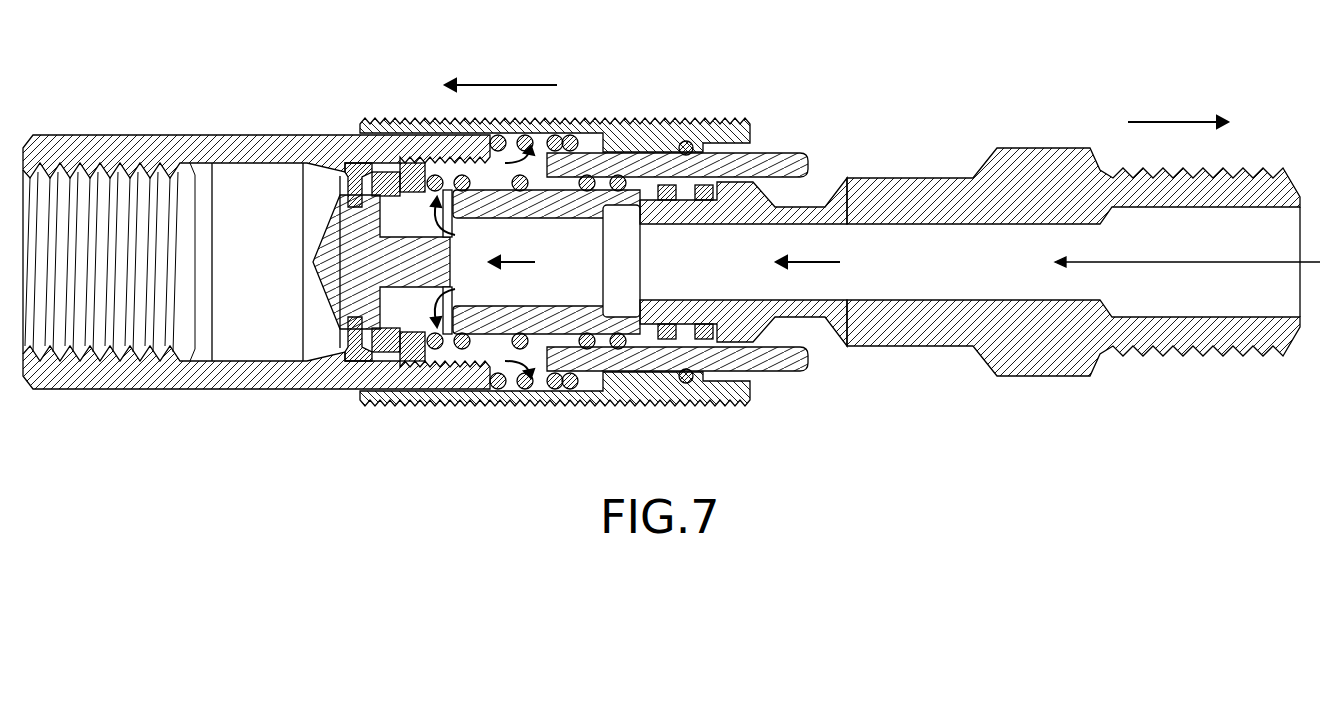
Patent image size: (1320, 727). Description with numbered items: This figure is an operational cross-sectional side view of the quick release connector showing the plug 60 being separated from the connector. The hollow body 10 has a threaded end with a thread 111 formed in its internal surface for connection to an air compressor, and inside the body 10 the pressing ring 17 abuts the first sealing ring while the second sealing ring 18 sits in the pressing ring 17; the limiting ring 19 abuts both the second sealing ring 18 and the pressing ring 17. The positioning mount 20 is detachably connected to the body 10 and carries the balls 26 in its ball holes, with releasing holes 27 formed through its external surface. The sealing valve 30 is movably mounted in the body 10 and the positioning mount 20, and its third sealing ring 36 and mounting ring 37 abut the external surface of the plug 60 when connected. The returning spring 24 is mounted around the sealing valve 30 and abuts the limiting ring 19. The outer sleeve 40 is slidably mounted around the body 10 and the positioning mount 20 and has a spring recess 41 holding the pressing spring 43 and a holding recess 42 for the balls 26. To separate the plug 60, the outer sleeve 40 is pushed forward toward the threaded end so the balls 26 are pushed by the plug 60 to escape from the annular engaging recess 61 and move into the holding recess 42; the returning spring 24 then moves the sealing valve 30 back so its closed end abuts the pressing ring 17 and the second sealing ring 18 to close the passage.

The body 10 is at (210, 134).
The thread 111 is at (107, 182).
The pressing ring 17 is at (368, 166).
The second sealing ring 18 is at (385, 178).
The limiting ring 19 is at (413, 165).
The positioning mount 20 is at (808, 375).
The returning spring 24 is at (447, 349).
The balls 26 is at (689, 144).
The releasing holes 27 is at (522, 148).
The sealing valve 30 is at (308, 287).
The third sealing ring 36 is at (667, 202).
The mounting ring 37 is at (706, 202).
The outer sleeve 40 is at (636, 117).
The spring recess 41 is at (516, 388).
The holding recess 42 is at (690, 382).
The pressing spring 43 is at (562, 389).
The plug 60 is at (1046, 148).
The annular engaging recess 61 is at (826, 204).